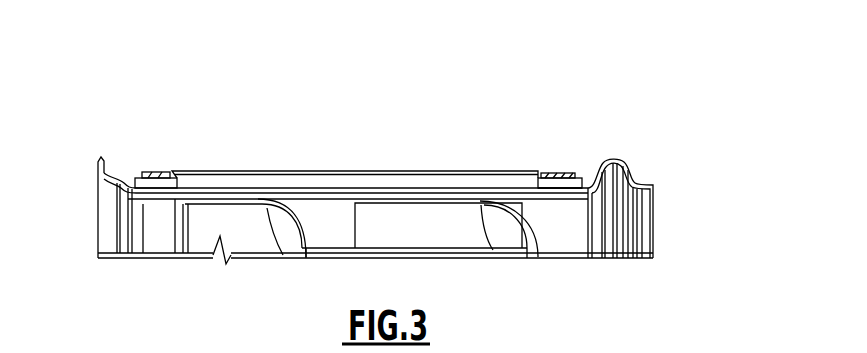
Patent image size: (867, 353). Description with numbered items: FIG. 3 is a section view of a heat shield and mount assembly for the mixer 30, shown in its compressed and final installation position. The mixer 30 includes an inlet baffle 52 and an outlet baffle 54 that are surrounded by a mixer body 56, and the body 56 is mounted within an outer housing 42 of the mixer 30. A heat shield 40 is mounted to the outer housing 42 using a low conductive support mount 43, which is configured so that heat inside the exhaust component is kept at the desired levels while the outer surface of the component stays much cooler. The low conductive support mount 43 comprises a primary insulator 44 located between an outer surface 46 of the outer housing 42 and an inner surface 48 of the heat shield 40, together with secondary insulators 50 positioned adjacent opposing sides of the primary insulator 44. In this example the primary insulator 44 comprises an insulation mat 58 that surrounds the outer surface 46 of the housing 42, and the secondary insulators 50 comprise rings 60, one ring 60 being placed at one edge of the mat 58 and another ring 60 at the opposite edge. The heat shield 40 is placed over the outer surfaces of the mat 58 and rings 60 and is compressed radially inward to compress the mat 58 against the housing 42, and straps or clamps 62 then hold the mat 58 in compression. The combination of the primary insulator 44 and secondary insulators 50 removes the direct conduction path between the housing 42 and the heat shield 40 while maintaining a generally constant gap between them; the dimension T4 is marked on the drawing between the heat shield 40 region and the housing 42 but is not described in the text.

The mixer 30 is at (710, 96).
The heat shield 40 is at (549, 165).
The outer housing 42 is at (633, 177).
The low conductive support mount 43 is at (160, 157).
The primary insulator 44 is at (205, 173).
The outer surface 46 is at (302, 193).
The inner surface 48 is at (403, 174).
The secondary insulators 50 is at (118, 192).
The inlet baffle 52 is at (296, 224).
The outlet baffle 54 is at (519, 235).
The mixer body 56 is at (333, 200).
The insulation mat 58 is at (443, 183).
The rings 60 is at (137, 184).
The straps or clamps 62 is at (157, 173).
The thickness dimension T4 is at (549, 201).